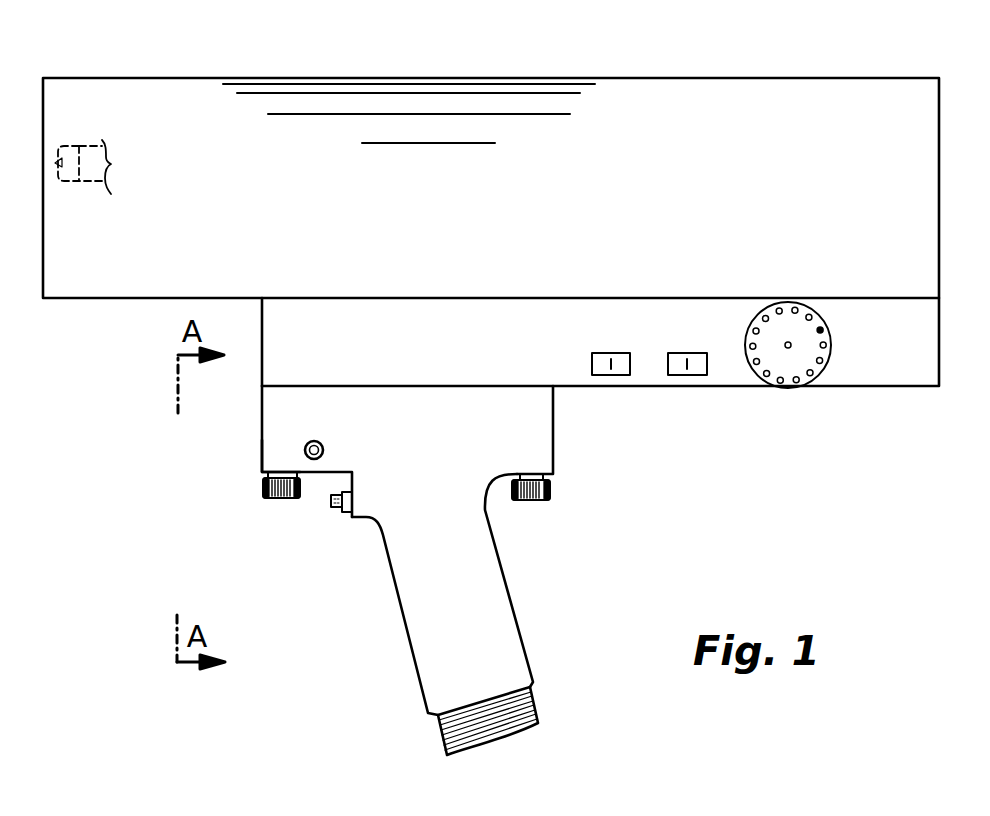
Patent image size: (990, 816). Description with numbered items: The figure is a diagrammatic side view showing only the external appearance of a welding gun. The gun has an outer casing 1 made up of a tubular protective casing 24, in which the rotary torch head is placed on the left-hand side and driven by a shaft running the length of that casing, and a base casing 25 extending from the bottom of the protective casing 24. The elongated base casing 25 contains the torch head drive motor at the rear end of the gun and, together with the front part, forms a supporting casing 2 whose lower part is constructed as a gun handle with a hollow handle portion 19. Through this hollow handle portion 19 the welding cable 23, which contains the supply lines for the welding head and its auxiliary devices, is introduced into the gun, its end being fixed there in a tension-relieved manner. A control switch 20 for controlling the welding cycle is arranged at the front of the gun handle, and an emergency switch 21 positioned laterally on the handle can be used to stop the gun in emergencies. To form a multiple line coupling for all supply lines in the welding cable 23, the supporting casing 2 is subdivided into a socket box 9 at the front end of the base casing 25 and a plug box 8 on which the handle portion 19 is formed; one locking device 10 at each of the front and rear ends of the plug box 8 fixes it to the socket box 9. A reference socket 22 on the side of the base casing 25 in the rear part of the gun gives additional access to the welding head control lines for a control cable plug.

The outer casing 1 is at (940, 240).
The supporting casing 2 is at (275, 367).
The plug box 8 is at (275, 452).
The socket box 9 is at (278, 312).
The locking device 10 is at (282, 500).
The hollow handle portion 19 is at (412, 600).
The control switch 20 is at (337, 512).
The emergency switch 21 is at (325, 445).
The reference socket 22 is at (788, 380).
The welding cable 23 is at (530, 692).
The protective casing 24 is at (697, 95).
The base casing 25 is at (648, 378).